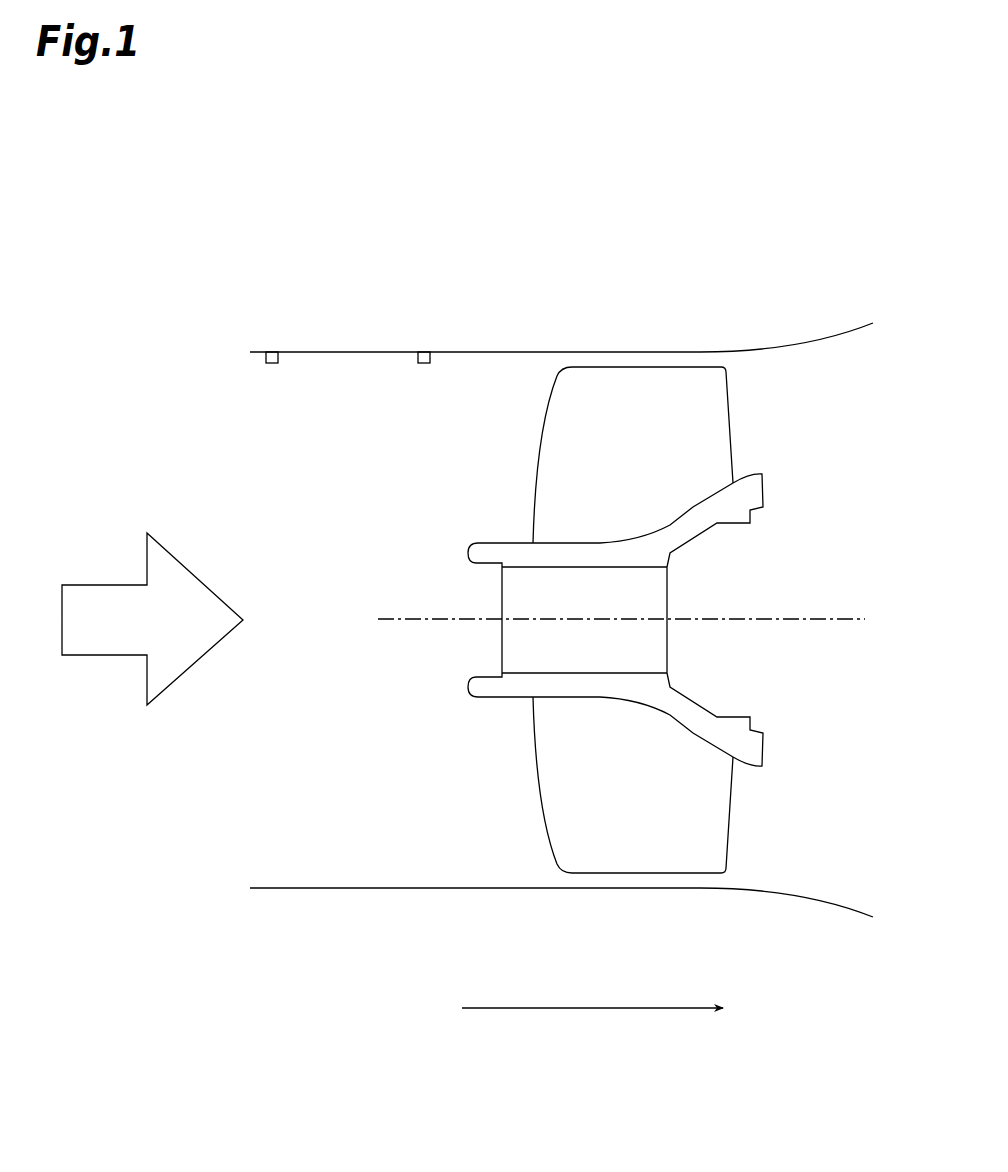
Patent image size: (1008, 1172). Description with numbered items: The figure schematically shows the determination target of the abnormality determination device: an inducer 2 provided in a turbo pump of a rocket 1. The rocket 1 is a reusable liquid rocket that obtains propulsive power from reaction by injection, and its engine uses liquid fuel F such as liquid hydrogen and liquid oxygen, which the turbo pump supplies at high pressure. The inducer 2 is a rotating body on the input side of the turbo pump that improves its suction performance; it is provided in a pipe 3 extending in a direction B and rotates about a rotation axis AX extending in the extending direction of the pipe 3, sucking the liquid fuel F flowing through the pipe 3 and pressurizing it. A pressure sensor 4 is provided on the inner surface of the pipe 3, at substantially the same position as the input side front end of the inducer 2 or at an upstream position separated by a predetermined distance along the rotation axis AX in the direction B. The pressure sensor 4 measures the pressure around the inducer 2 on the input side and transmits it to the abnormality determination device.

The rocket 1 is at (818, 284).
The inducer 2 is at (778, 435).
The pipe 3 is at (309, 886).
The pressure sensor 4 is at (272, 364).
The liquid fuel F is at (84, 583).
The rotation axis AX is at (852, 615).
The direction B is at (597, 1006).